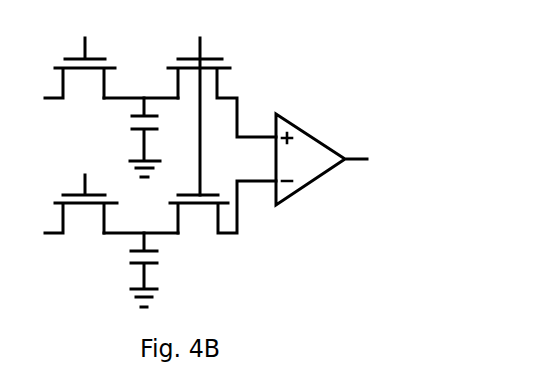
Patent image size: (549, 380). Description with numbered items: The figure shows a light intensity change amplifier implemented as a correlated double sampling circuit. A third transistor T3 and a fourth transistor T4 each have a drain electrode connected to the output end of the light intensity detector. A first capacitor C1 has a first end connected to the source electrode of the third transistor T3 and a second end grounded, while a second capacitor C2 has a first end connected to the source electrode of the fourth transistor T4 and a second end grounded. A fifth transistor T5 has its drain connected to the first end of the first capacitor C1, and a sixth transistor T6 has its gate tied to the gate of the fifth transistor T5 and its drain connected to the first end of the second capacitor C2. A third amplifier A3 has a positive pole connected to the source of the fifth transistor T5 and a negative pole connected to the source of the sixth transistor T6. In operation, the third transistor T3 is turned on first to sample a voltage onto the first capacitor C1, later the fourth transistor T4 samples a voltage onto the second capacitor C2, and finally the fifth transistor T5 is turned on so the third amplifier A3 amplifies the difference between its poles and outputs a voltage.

The third transistor T3 is at (80, 53).
The fourth transistor T4 is at (81, 188).
The fifth transistor T5 is at (222, 102).
The sixth transistor T6 is at (223, 197).
The first capacitor C1 is at (131, 137).
The second capacitor C2 is at (131, 270).
The third amplifier A3 is at (321, 159).